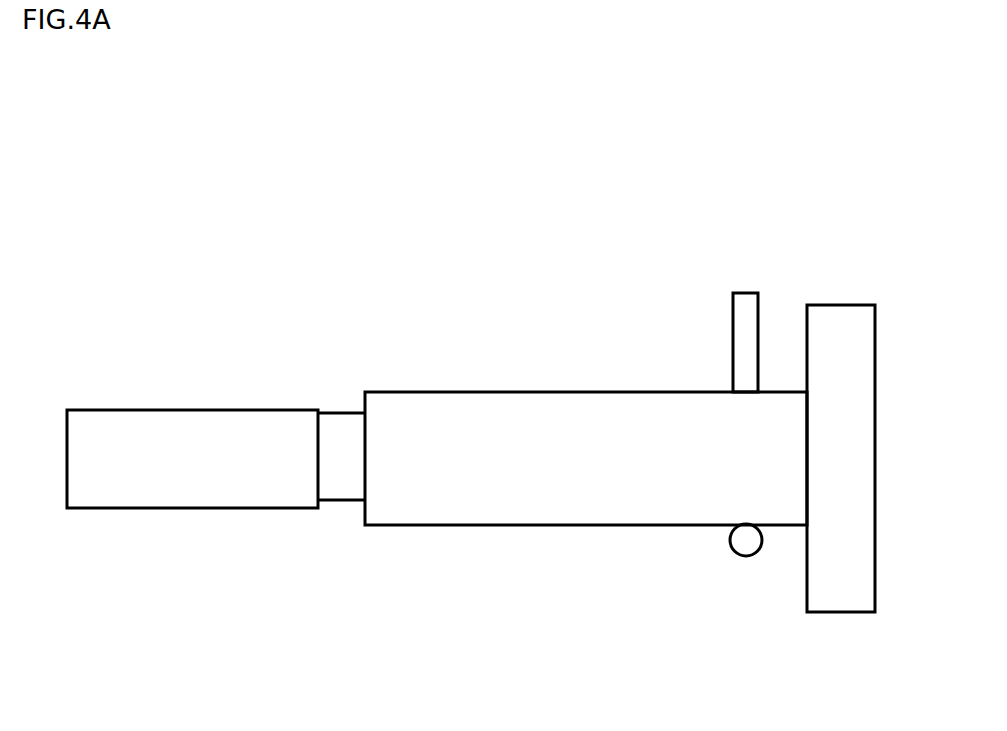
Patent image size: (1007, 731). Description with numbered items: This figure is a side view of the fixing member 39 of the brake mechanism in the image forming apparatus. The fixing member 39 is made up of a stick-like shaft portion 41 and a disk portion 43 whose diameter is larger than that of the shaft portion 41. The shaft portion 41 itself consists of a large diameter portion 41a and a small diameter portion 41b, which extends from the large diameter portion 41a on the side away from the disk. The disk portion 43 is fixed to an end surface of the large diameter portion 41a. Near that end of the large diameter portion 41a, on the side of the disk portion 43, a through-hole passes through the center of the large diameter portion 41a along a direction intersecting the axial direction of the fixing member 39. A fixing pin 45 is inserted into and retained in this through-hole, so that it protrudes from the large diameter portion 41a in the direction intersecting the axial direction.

The fixing member 39 is at (376, 243).
The shaft portion 41 is at (473, 392).
The large diameter portion 41a is at (538, 477).
The small diameter portion 41b is at (217, 482).
The disk portion 43 is at (850, 332).
The fixing pin 45 is at (740, 318).